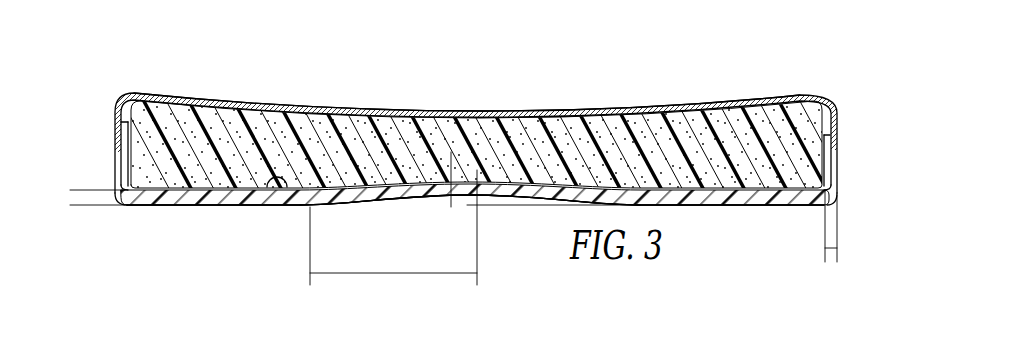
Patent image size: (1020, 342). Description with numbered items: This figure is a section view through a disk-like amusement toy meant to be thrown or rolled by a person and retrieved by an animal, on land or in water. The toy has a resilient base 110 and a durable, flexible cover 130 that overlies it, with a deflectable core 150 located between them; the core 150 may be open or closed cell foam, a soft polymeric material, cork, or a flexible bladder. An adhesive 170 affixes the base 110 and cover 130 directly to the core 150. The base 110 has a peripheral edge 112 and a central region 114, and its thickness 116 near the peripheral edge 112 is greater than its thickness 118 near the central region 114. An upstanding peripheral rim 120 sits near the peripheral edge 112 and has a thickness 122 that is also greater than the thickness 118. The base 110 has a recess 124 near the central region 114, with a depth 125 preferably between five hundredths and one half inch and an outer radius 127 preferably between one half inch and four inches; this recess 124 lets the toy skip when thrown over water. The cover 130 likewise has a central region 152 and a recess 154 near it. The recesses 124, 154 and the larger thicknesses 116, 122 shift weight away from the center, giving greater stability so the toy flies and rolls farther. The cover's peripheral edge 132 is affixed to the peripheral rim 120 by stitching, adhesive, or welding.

The base 110 is at (211, 200).
The peripheral edge 112 is at (120, 210).
The central region 114 is at (506, 259).
The thickness 116 is at (83, 226).
The thickness 118 is at (451, 160).
The peripheral rim 120 is at (832, 168).
The thickness 122 is at (862, 248).
The recess 124 is at (442, 197).
The depth 125 is at (477, 170).
The outer radius 127 is at (477, 273).
The cover 130 is at (158, 94).
The peripheral edge 132 is at (121, 96).
The core 150 is at (806, 113).
The central region 152 is at (586, 88).
The recess 154 is at (488, 108).
The adhesive 170 is at (278, 197).